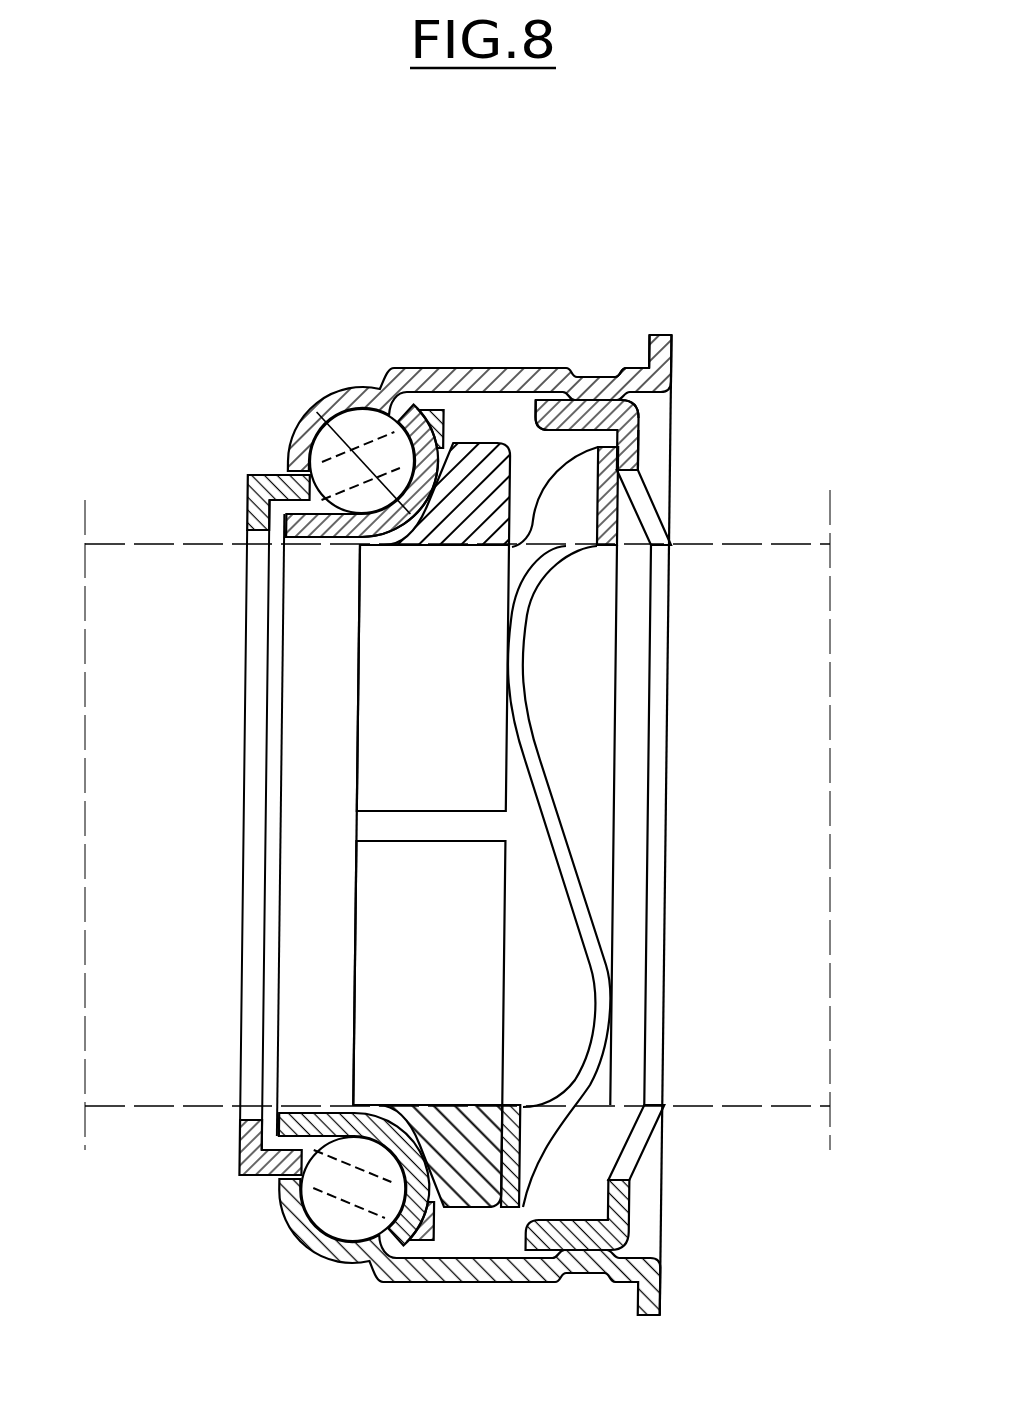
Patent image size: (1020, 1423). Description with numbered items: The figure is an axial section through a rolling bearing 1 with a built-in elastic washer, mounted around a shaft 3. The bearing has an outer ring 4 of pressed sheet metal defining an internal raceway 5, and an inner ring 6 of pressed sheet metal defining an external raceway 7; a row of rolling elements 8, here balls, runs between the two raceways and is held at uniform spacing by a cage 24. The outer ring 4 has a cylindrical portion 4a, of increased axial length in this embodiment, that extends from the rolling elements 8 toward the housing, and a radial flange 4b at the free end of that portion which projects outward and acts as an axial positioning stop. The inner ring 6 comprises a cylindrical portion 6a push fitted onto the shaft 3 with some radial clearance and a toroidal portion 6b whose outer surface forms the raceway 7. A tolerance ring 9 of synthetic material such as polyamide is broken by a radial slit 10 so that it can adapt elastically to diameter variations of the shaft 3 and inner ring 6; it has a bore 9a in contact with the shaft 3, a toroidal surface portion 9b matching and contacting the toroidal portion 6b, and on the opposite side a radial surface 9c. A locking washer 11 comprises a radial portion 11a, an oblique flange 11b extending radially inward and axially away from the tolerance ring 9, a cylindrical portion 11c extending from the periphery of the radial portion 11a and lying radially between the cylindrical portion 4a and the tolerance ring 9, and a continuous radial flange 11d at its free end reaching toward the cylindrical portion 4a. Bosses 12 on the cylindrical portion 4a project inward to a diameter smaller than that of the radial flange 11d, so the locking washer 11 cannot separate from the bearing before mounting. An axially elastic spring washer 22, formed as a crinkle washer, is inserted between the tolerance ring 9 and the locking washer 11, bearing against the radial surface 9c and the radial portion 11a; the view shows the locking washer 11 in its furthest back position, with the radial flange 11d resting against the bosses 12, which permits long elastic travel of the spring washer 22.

The rolling bearing 1 is at (476, 785).
The shaft 3 is at (130, 530).
The outer ring 4 is at (328, 380).
The cylindrical portion 4a is at (440, 387).
The radial flange 4b is at (660, 355).
The raceway 5 is at (289, 791).
The inner ring 6 is at (306, 552).
The cylindrical portion 6a is at (320, 525).
The toroidal portion 6b is at (400, 500).
The raceway 7 is at (287, 452).
The rolling elements 8 is at (290, 442).
The tolerance ring 9 is at (535, 756).
The bore 9a is at (460, 722).
The toroidal surface portion 9b is at (383, 395).
The radial surface 9c is at (518, 465).
The radial slit 10 is at (470, 822).
The locking washer 11 is at (650, 430).
The radial portion 11a is at (633, 450).
The oblique flange 11b is at (643, 508).
The cylindrical portion 11c is at (630, 413).
The radial flange 11d is at (546, 405).
The bosses 12 is at (604, 377).
The spring washer 22 is at (540, 677).
The cage 24 is at (248, 498).